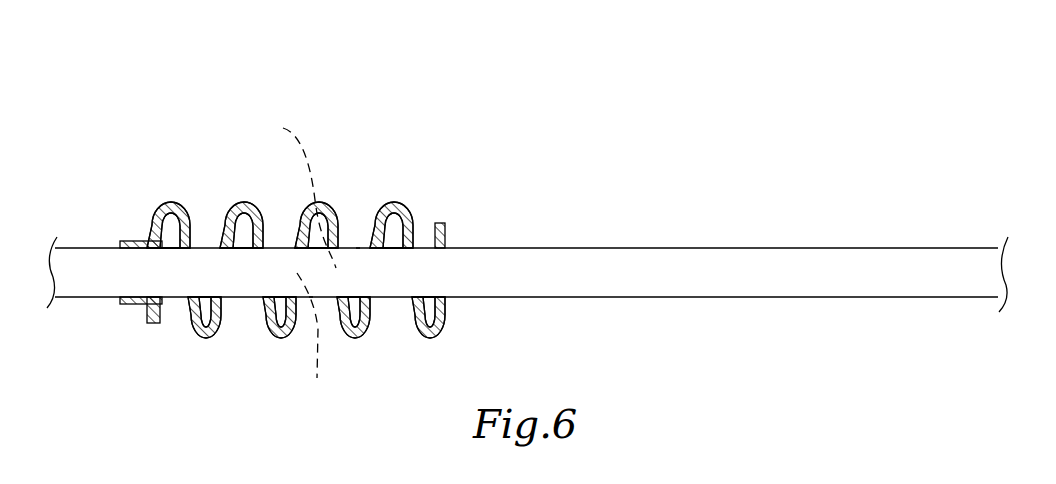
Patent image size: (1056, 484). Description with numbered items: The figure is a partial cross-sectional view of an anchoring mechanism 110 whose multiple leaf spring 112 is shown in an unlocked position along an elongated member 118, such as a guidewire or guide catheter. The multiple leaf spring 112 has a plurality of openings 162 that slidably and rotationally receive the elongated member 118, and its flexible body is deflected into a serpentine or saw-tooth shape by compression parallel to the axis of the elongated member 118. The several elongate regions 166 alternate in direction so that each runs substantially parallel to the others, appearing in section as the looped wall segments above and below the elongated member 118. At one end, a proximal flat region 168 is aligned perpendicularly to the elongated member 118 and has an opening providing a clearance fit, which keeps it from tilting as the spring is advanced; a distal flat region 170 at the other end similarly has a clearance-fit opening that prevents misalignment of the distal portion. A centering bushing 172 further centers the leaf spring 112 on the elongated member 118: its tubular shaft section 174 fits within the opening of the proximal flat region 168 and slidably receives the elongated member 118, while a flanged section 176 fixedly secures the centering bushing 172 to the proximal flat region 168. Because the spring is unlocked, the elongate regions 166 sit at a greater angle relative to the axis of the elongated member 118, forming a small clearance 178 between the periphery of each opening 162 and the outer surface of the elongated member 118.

The anchoring mechanism 110 is at (221, 100).
The multiple leaf spring 112 is at (341, 156).
The elongated member 118 is at (775, 281).
The openings 162 is at (332, 396).
The elongate regions 166 is at (342, 228).
The proximal flat region 168 is at (152, 230).
The distal flat region 170 is at (446, 233).
The centering bushing 172 is at (119, 228).
The tubular shaft section 174 is at (127, 305).
The flanged section 176 is at (165, 304).
The clearance 178 is at (297, 244).